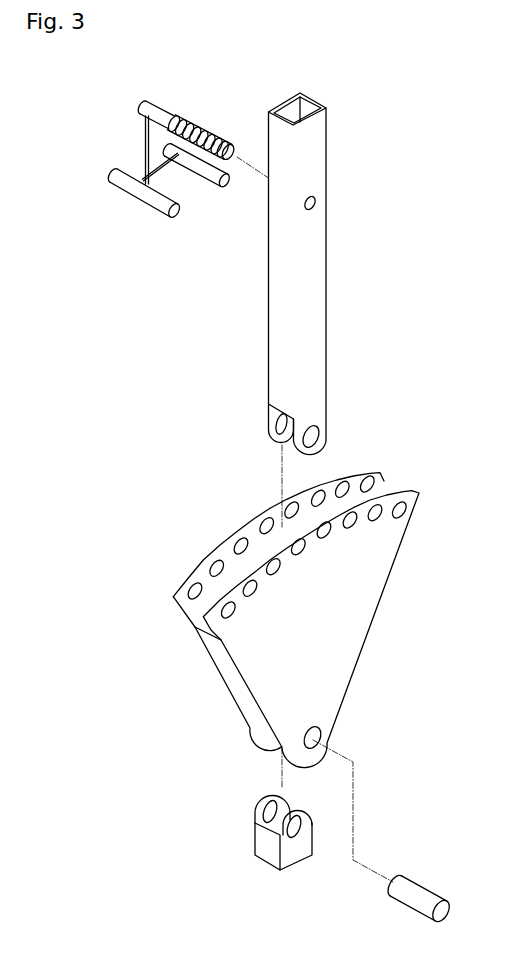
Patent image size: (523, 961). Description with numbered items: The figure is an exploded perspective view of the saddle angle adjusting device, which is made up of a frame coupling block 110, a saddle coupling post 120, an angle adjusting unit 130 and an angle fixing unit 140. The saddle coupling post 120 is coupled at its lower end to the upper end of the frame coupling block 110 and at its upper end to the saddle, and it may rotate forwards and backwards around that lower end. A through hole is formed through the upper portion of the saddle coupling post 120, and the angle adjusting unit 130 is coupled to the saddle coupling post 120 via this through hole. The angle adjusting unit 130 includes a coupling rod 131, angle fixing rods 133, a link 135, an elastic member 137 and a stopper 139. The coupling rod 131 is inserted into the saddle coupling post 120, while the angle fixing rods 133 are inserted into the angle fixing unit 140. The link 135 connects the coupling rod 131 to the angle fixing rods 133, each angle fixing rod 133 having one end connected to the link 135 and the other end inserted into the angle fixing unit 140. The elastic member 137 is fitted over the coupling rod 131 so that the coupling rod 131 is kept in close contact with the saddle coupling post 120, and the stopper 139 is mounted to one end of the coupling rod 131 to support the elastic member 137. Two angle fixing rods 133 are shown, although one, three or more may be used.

The frame coupling block 110 is at (263, 850).
The saddle coupling post 120 is at (315, 157).
The angle adjusting unit 130 is at (109, 172).
The coupling rod 131 is at (140, 102).
The angle fixing rod 133 is at (137, 192).
The link 135 is at (146, 137).
The elastic member 137 is at (195, 120).
The stopper 139 is at (235, 150).
The angle fixing unit 140 is at (368, 615).